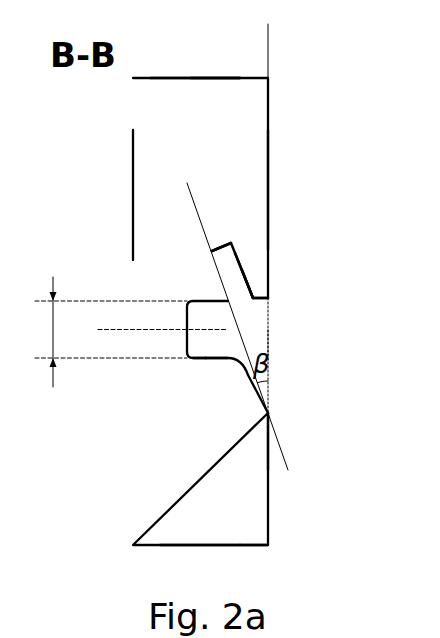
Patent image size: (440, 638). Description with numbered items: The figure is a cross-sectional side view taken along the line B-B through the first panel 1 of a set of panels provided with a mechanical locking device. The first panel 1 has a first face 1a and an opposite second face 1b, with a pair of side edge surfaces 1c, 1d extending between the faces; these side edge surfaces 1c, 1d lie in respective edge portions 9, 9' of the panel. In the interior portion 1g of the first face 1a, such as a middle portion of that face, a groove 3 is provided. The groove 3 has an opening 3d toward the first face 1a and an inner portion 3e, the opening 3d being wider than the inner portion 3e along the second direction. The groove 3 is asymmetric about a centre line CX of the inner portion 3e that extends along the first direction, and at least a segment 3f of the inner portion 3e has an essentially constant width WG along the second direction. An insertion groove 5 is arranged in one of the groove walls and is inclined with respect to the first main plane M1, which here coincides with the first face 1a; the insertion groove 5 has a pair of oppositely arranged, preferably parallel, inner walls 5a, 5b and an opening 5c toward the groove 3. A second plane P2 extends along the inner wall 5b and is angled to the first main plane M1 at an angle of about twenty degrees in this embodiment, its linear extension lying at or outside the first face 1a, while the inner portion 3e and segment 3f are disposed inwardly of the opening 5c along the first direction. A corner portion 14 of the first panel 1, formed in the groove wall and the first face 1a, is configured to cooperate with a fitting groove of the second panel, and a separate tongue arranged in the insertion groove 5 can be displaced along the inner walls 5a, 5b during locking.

The first panel 1 is at (209, 167).
The first face 1a is at (268, 190).
The second face 1b is at (133, 196).
The side edge surface 1c is at (200, 545).
The side edge surface 1d is at (168, 78).
The interior portion 1g is at (322, 375).
The groove 3 is at (196, 296).
The opening 3d is at (276, 344).
The inner portion 3e is at (218, 366).
The segment 3f is at (203, 358).
The insertion groove 5 is at (229, 238).
The inner wall 5a is at (276, 258).
The inner wall 5b is at (222, 254).
The opening 5c is at (245, 302).
The edge portion 9 is at (258, 575).
The edge portion 9' is at (215, 41).
The corner portion 14 is at (275, 302).
The first main plane M1 is at (269, 207).
The second plane P2 is at (246, 343).
The constant width WG is at (99, 332).
The centre line CX is at (146, 328).